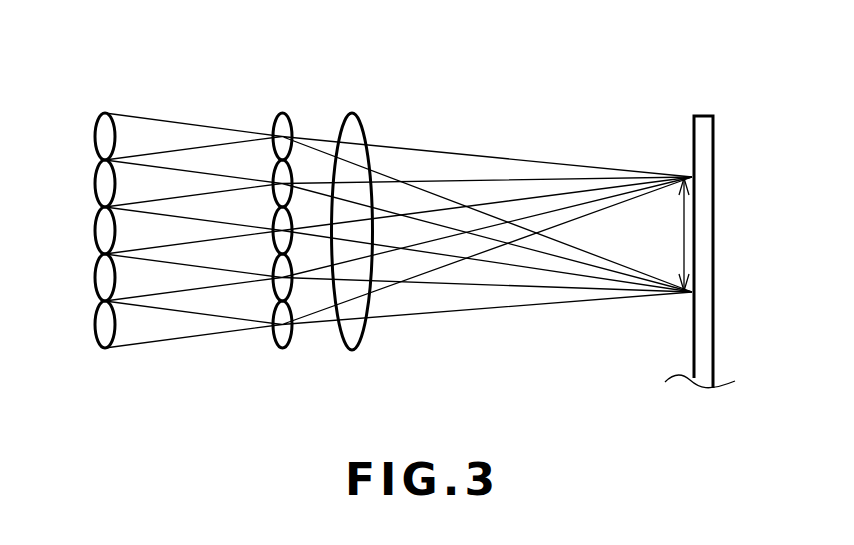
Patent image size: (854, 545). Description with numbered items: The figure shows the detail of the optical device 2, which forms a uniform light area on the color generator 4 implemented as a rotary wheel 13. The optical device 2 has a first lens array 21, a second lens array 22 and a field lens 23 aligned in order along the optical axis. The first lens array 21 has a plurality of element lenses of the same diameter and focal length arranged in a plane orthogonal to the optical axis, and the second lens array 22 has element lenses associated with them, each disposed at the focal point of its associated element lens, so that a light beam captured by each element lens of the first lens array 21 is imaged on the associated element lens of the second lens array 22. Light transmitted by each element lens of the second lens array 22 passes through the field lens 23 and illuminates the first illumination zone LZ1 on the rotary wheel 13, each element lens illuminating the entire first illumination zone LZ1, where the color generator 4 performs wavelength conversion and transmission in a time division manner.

The optical device 2 is at (185, 378).
The first lens array 21 is at (102, 127).
The second lens array 22 is at (280, 127).
The field lens 23 is at (352, 125).
The color generator 4 is at (694, 211).
The rotary wheel 13 is at (702, 127).
The first illumination zone LZ1 is at (650, 234).